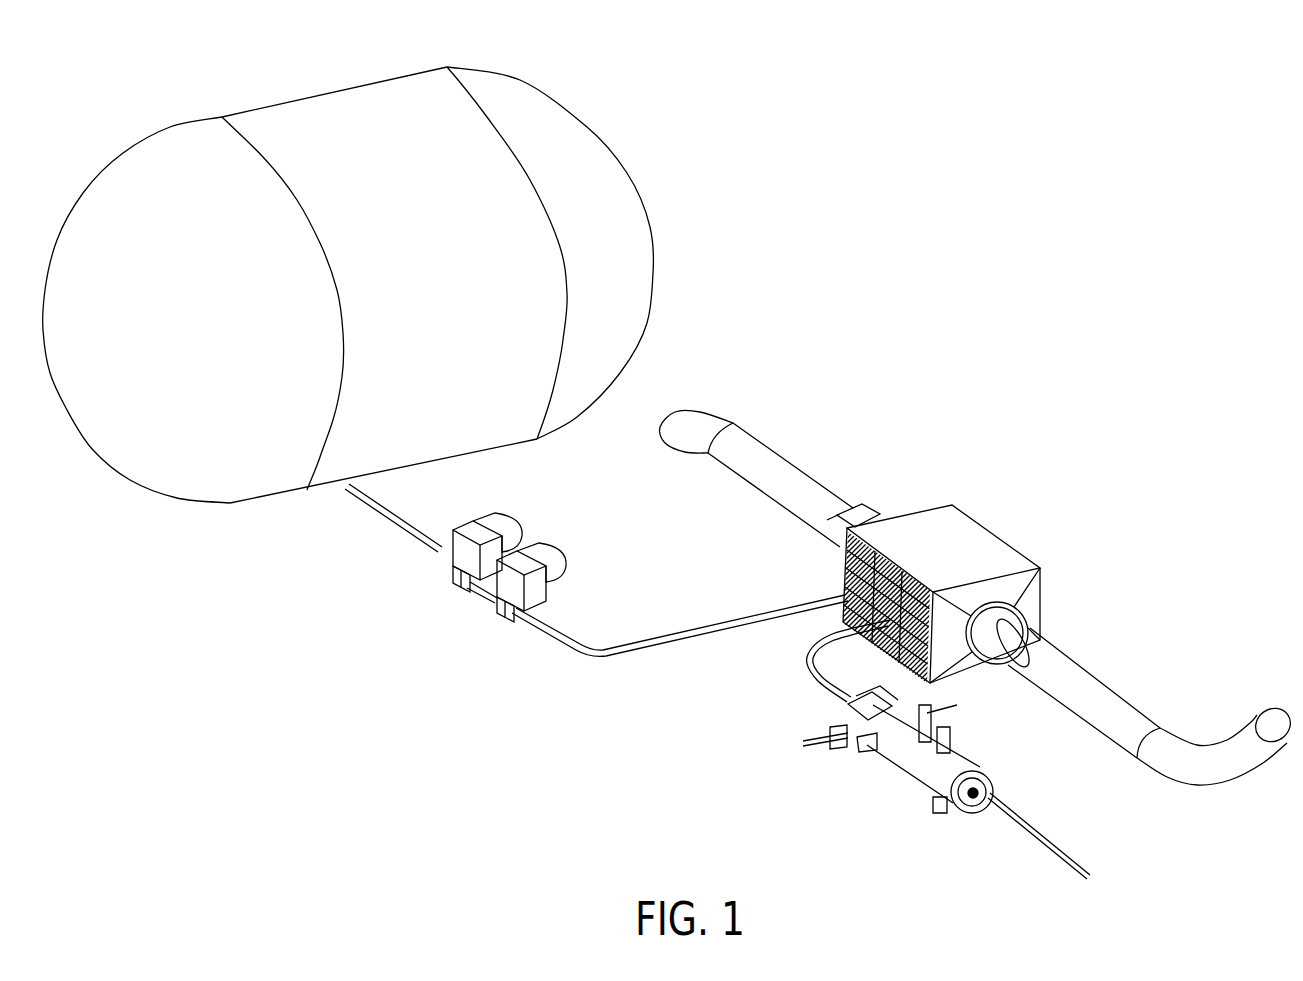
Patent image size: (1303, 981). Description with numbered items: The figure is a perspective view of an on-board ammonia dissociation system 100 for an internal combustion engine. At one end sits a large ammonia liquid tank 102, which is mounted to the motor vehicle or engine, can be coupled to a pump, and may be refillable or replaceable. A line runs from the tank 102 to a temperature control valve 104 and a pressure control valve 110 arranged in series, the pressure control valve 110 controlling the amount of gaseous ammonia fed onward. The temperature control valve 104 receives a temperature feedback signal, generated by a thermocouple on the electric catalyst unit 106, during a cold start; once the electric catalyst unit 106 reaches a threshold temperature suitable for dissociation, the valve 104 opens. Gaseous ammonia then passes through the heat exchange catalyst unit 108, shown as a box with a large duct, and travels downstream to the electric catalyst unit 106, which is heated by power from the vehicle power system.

The on-board ammonia dissociation system 100 is at (935, 142).
The ammonia liquid tank 102 is at (331, 87).
The temperature control valve 104 is at (452, 570).
The electric catalyst unit 106 is at (900, 770).
The heat exchange catalyst unit 108 is at (1007, 540).
The pressure control valve 110 is at (497, 603).